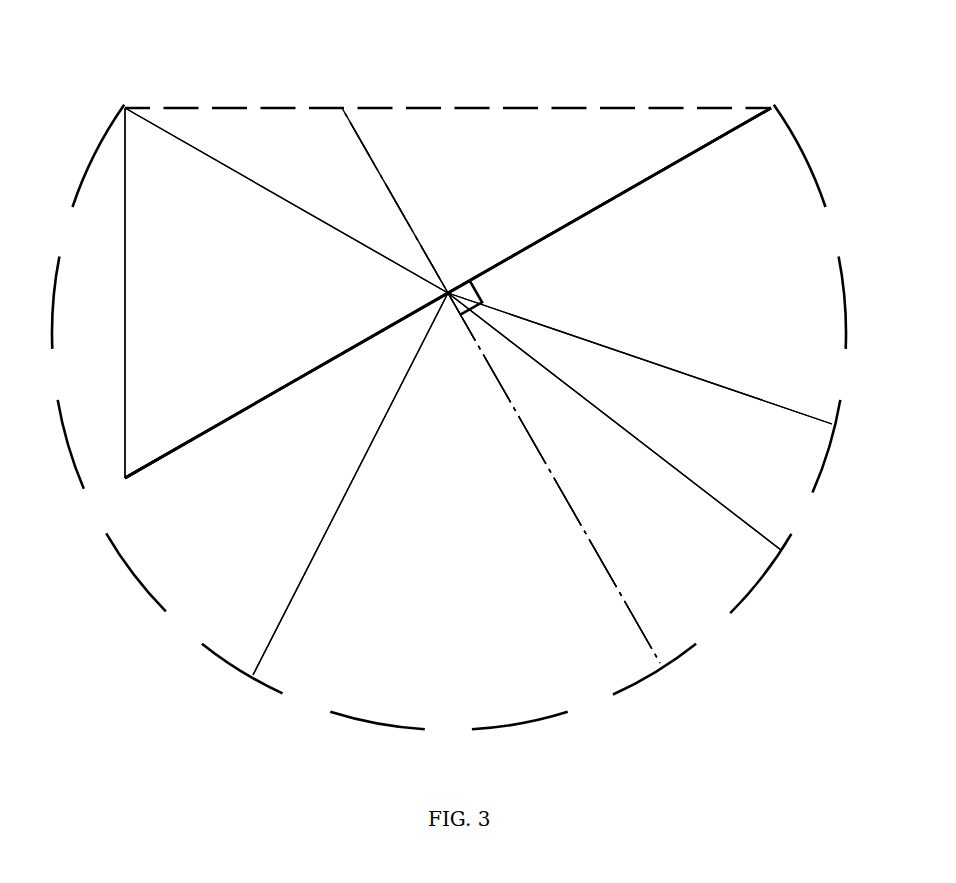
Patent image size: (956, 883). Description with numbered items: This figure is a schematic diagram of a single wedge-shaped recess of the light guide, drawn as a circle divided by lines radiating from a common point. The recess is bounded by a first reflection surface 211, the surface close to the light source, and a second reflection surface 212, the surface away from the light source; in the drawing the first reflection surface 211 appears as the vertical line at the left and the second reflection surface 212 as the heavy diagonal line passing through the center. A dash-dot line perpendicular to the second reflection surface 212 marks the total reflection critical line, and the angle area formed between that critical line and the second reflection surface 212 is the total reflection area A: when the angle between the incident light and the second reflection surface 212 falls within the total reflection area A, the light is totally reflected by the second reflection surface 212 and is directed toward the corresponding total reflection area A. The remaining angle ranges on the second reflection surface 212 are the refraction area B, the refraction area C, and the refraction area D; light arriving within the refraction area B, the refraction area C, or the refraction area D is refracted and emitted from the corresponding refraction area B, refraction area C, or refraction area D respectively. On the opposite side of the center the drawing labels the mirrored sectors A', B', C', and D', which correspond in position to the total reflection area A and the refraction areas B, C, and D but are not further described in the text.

The first reflection surface 211 is at (125, 250).
The second reflection surface 212 is at (647, 180).
The total reflection area A is at (640, 266).
The refraction area B is at (640, 421).
The refraction area C is at (614, 478).
The refraction area D is at (456, 484).
The region A' is at (286, 484).
The region B' is at (286, 293).
The region C' is at (286, 200).
The region D' is at (556, 200).